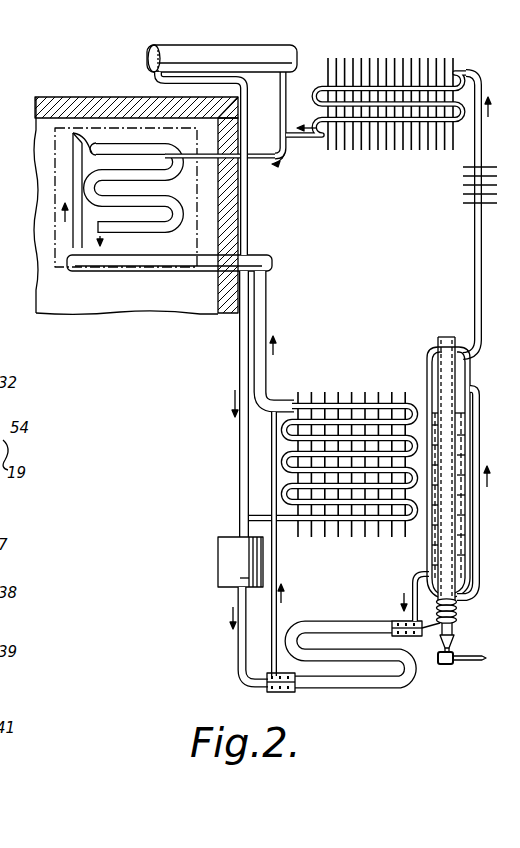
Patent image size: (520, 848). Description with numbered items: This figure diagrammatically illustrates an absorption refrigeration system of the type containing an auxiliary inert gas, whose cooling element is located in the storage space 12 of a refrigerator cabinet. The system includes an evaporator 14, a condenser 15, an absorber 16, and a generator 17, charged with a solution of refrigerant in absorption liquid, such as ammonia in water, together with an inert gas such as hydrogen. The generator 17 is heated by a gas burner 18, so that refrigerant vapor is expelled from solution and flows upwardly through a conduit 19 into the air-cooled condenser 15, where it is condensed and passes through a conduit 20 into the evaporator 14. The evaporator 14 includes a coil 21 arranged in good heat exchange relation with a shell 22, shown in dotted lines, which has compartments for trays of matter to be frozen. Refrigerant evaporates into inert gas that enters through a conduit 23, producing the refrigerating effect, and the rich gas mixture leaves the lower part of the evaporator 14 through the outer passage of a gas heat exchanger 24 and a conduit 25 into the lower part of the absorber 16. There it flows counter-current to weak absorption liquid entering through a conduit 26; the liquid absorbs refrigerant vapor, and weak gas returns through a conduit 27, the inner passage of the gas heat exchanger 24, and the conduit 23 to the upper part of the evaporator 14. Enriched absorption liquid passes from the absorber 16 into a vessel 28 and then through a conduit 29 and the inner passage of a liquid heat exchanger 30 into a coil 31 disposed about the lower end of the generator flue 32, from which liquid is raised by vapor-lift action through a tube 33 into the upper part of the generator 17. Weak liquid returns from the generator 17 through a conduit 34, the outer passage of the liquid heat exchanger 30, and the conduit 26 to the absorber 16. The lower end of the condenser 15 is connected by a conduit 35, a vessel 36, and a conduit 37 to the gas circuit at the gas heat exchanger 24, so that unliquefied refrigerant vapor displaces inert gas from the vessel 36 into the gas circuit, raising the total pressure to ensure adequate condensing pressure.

The storage space 12 is at (93, 303).
The evaporator 14 is at (53, 174).
The condenser 15 is at (422, 61).
The absorber 16 is at (349, 397).
The generator 17 is at (470, 373).
The gas burner 18 is at (453, 648).
The conduit 19 is at (475, 253).
The conduit 20 is at (266, 163).
The coil 21 is at (102, 143).
The shell 22 is at (57, 217).
The conduit 23 is at (75, 230).
The gas heat exchanger 24 is at (203, 272).
The conduit 25 is at (238, 457).
The conduit 26 is at (278, 566).
The conduit 27 is at (268, 315).
The vessel 28 is at (218, 563).
The conduit 29 is at (238, 648).
The liquid heat exchanger 30 is at (401, 688).
The coil 31 is at (457, 612).
The generator flue 32 is at (459, 578).
The tube 33 is at (478, 538).
The conduit 34 is at (412, 580).
The conduit 35 is at (281, 101).
The vessel 36 is at (266, 53).
The conduit 37 is at (156, 82).